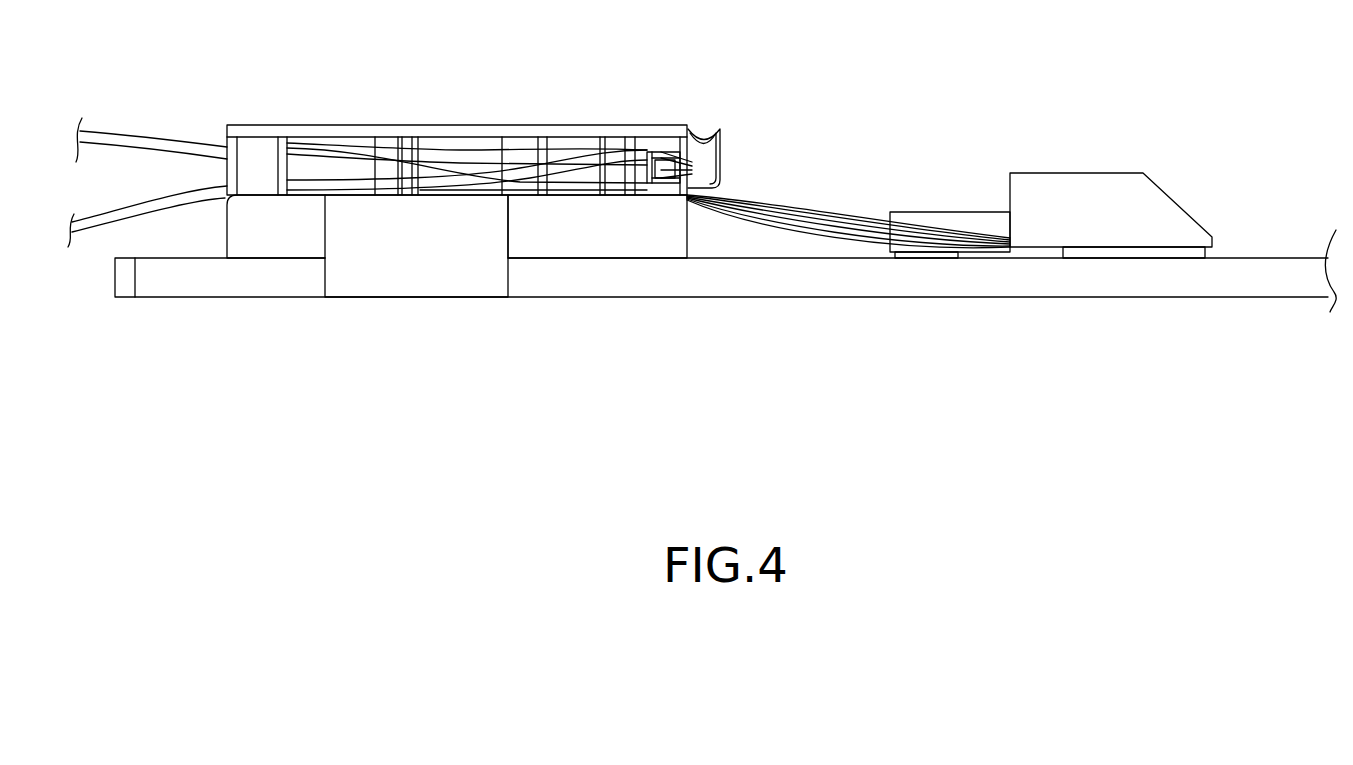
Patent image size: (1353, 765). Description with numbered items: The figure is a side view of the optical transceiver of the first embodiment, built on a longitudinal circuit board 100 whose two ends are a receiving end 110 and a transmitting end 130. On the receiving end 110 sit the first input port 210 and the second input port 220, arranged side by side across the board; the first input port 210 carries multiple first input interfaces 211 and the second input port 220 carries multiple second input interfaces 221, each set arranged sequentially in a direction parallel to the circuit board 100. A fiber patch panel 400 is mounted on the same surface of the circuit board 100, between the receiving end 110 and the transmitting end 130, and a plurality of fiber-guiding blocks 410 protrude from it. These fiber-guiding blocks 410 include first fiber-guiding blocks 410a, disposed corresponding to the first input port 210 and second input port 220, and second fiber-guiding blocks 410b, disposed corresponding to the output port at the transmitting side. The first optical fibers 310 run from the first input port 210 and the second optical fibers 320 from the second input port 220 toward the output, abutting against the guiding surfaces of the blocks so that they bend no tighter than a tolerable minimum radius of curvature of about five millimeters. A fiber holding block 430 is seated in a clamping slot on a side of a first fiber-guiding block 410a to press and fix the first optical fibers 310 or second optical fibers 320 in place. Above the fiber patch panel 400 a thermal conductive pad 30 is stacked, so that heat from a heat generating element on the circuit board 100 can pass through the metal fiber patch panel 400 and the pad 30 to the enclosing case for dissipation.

The thermal conductive pad 30 is at (592, 133).
The circuit board 100 is at (1012, 298).
The receiving end 110 is at (1233, 285).
The transmitting end 130 is at (262, 280).
The first input port 210 is at (970, 222).
The first input interfaces 211 is at (958, 253).
The second input port 220 is at (1125, 190).
The second input interfaces 221 is at (1062, 258).
The first optical fibers 310 is at (133, 132).
The second optical fibers 320 is at (840, 218).
The fiber patch panel 400 is at (358, 298).
The fiber-guiding blocks 410 is at (602, 397).
The first fiber-guiding blocks 410a is at (643, 187).
The second fiber-guiding blocks 410b is at (350, 167).
The fiber holding block 430 is at (715, 152).